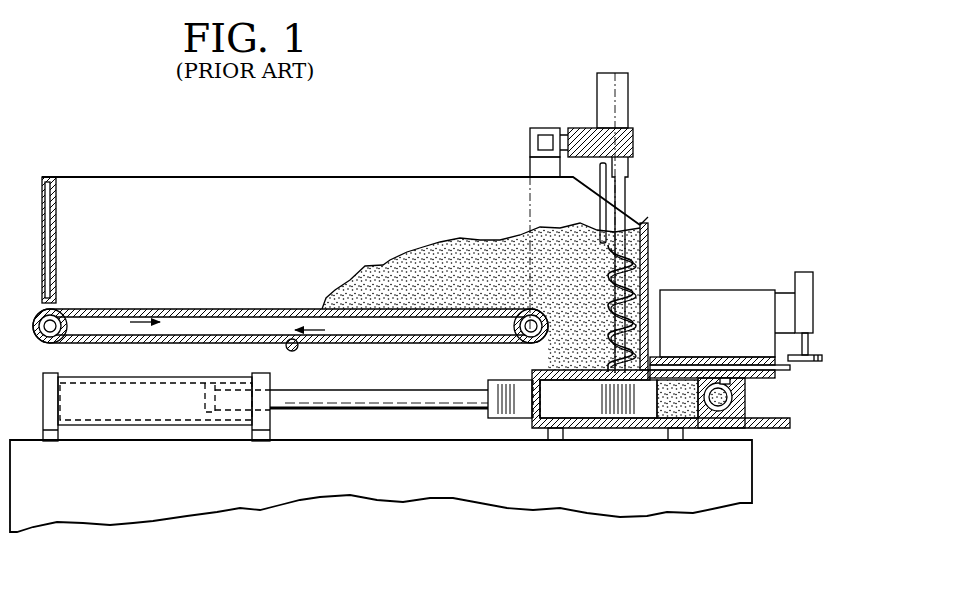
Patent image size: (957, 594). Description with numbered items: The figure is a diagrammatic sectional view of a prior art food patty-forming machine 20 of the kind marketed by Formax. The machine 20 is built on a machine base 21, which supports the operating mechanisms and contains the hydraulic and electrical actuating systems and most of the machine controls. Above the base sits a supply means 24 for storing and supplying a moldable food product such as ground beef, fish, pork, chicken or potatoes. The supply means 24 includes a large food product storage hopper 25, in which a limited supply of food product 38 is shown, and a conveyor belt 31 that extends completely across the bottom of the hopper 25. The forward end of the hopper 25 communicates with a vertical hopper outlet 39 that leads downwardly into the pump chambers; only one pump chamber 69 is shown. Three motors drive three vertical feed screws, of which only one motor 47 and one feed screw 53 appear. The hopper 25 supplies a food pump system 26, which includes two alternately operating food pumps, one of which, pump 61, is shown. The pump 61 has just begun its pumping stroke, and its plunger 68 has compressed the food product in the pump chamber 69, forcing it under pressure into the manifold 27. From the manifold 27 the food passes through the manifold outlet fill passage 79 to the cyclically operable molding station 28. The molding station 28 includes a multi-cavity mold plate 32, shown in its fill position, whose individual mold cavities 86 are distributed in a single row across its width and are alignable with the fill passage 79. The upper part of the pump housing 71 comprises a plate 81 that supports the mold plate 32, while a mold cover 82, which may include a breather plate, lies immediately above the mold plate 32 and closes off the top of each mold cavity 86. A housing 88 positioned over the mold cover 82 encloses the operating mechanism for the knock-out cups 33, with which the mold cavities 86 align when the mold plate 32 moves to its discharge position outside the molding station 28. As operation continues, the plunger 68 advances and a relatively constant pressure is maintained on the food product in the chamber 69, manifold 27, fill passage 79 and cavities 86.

The food patty-forming machine 20 is at (662, 222).
The machine base 21 is at (155, 508).
The supply means 24 is at (575, 126).
The food product storage hopper 25 is at (215, 177).
The food pump system 26 is at (410, 414).
The manifold 27 is at (713, 441).
The molding station 28 is at (712, 289).
The conveyor belt 31 is at (420, 343).
The mold plate 32 is at (788, 369).
The knock-out cups 33 is at (822, 358).
The food product 38 is at (385, 262).
The hopper outlet 39 is at (575, 290).
The motor 47 is at (630, 100).
The feed screw 53 is at (640, 250).
The pump 61 is at (274, 384).
The plunger 68 is at (490, 413).
The pump chamber 69 is at (672, 418).
The pump housing 71 is at (618, 440).
The manifold outlet fill passage 79 is at (740, 398).
The plate 81 is at (740, 380).
The mold cover 82 is at (690, 357).
The mold cavities 86 is at (733, 357).
The housing 88 is at (752, 290).